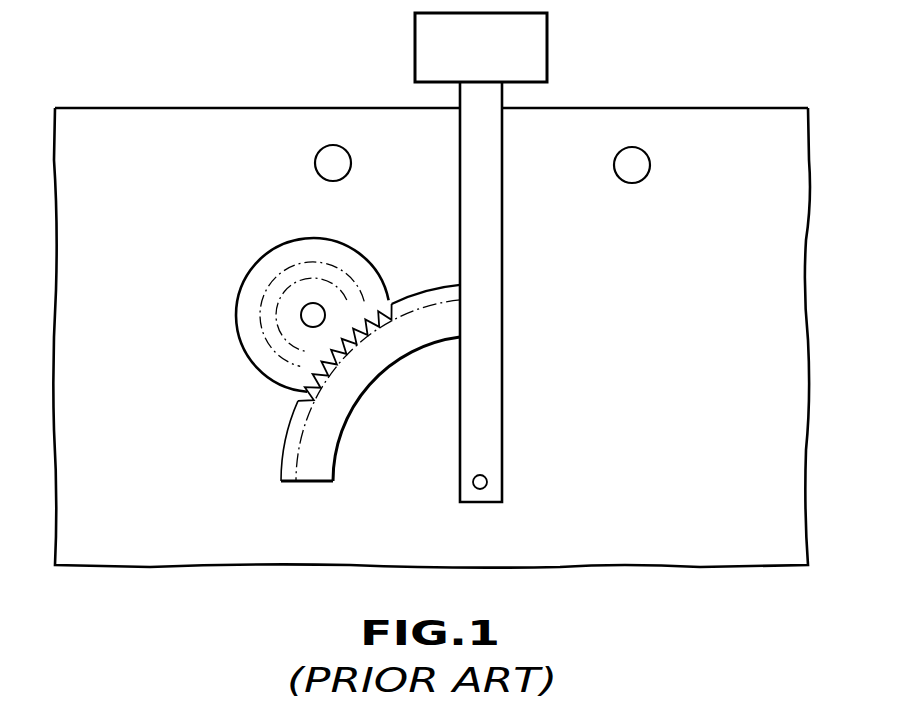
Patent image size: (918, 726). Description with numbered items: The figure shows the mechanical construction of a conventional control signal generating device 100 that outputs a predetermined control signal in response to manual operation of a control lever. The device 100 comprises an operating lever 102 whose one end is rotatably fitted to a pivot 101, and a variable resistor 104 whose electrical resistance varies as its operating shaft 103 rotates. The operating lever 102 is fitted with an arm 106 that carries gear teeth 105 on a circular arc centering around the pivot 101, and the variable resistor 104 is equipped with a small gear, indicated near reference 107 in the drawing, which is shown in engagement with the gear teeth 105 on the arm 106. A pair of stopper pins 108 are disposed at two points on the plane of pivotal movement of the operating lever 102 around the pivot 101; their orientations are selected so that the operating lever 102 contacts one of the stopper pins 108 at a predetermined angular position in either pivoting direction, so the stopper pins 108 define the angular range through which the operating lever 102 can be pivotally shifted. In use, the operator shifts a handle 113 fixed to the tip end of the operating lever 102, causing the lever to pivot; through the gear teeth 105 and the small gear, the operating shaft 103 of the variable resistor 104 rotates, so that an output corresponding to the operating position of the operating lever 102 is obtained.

The device 100 is at (662, 427).
The pivot 101 is at (487, 480).
The operating lever 102 is at (487, 288).
The operating shaft 103 is at (303, 322).
The variable resistor 104 is at (247, 310).
The gear teeth 105 is at (297, 400).
The arm 106 is at (337, 425).
The gear pitch circle 107 is at (332, 300).
The stopper pins 108 is at (323, 163).
The handle 113 is at (547, 53).